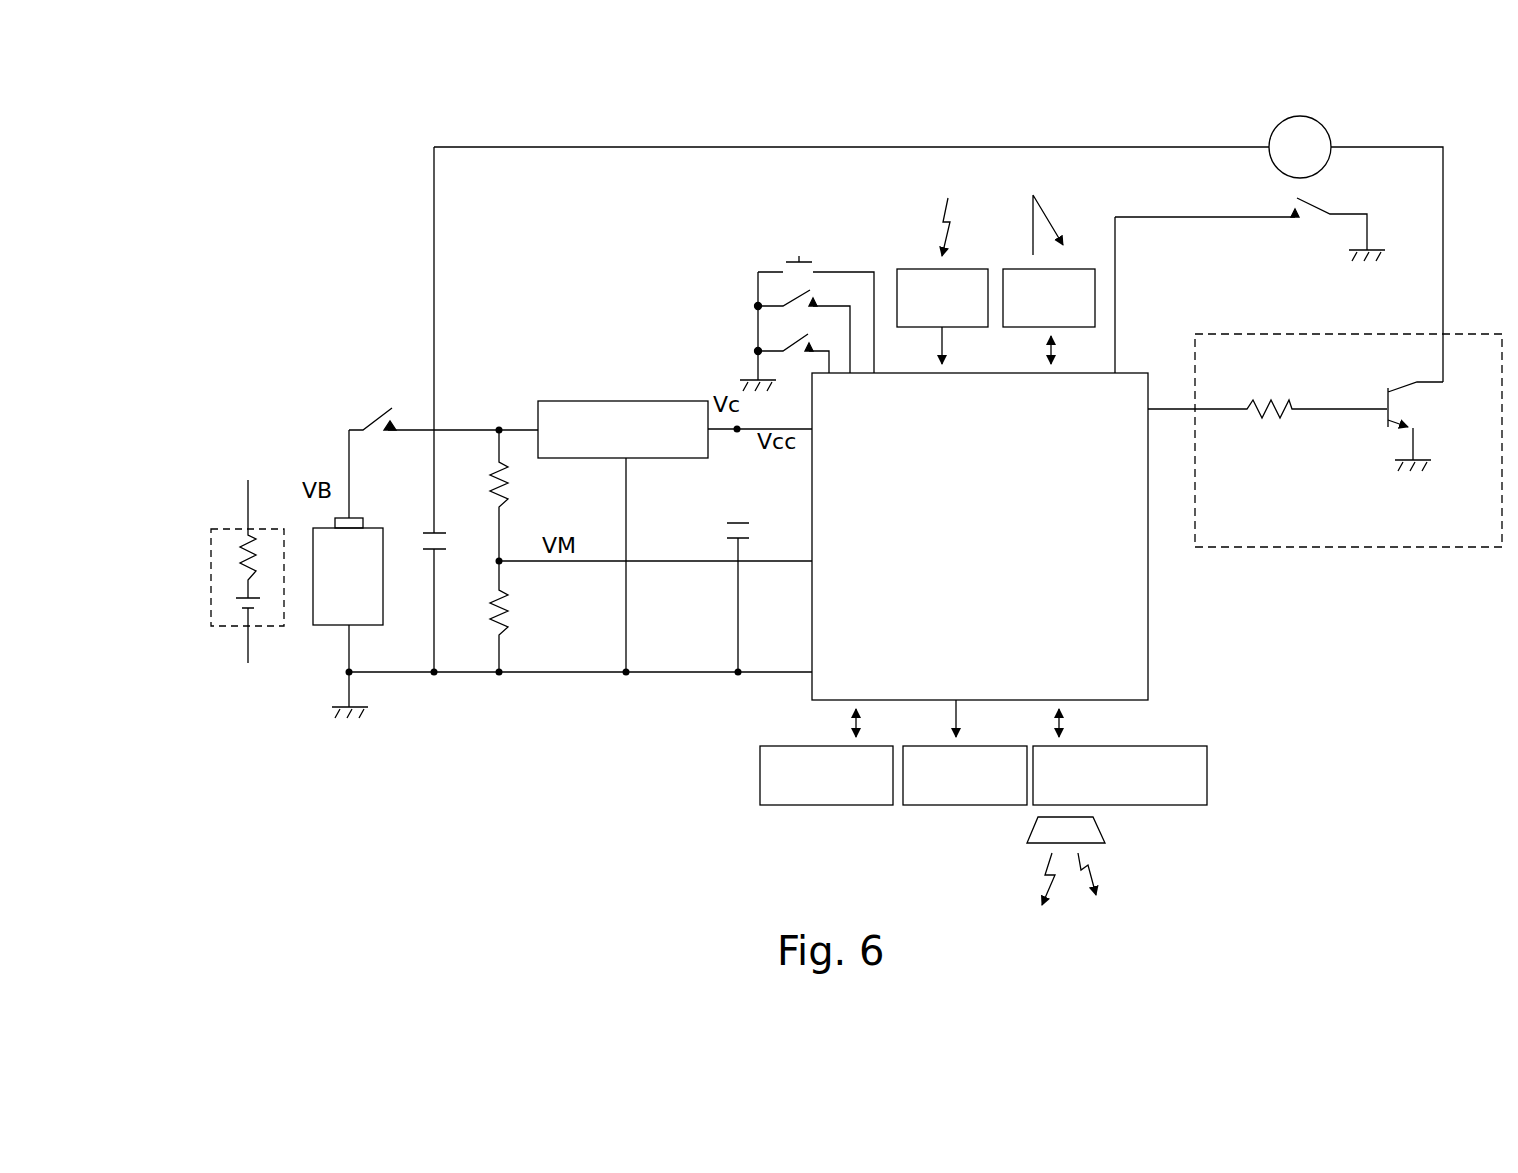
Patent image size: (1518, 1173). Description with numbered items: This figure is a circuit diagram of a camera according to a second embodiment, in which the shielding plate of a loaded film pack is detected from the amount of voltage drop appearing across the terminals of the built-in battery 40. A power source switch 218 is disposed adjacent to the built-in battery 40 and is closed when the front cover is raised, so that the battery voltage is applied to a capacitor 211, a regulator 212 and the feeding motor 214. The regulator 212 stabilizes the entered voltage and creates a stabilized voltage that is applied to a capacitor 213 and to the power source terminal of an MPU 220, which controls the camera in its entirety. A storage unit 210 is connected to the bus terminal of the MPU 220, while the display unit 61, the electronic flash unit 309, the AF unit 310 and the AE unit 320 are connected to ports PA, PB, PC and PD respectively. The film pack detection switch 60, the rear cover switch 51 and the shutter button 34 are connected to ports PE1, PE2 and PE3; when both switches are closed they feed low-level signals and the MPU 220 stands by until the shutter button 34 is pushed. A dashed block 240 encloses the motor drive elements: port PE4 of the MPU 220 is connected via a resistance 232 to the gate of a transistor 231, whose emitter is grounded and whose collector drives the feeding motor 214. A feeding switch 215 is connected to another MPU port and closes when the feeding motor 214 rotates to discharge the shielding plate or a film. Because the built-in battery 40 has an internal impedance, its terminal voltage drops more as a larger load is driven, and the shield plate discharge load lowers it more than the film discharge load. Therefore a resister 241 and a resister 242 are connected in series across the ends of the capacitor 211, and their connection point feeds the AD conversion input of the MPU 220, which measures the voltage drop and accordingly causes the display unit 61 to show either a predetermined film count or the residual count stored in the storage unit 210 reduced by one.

The feeding motor 214 is at (1330, 127).
The feeding switch 215 is at (1318, 200).
The power source switch 218 is at (380, 413).
The capacitor 211 is at (448, 540).
The regulator 212 is at (617, 400).
The capacitor 213 is at (727, 530).
The resister 241 is at (512, 485).
The resister 242 is at (512, 613).
The MPU 220 is at (815, 622).
The built-in battery 40 is at (323, 627).
The shutter button 34 is at (783, 268).
The rear cover switch 51 is at (783, 301).
The film pack detection switch 60 is at (783, 347).
The AE unit 320 is at (972, 268).
The AF unit 310 is at (1084, 268).
The transistor 231 is at (1405, 403).
The resistance 232 is at (1268, 415).
The motor drive circuit 240 is at (1325, 482).
The storage unit 210 is at (835, 805).
The display unit 61 is at (955, 805).
The electronic flash unit 309 is at (1183, 805).